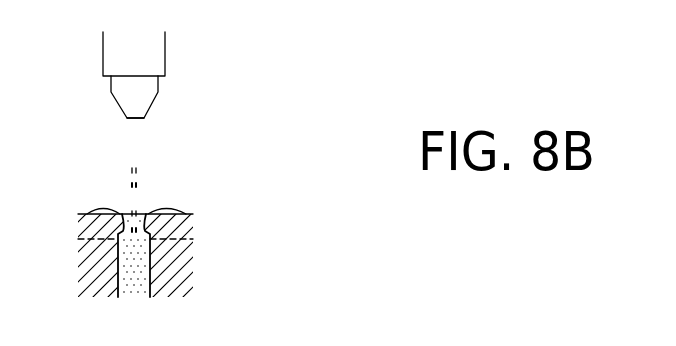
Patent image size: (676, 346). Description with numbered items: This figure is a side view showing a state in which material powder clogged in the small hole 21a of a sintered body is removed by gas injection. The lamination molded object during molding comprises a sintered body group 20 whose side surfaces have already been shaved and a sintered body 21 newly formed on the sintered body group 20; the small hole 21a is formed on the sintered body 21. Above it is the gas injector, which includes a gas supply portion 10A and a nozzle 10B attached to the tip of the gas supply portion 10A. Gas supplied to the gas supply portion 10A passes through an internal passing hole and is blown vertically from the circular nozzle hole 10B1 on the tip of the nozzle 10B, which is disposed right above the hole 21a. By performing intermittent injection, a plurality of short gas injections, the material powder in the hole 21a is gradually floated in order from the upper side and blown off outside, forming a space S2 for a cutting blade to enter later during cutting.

The gas supply portion 10A is at (153, 49).
The nozzle 10B is at (138, 105).
The nozzle hole 10B1 is at (130, 122).
The sintered body 21 is at (188, 228).
The sintered body group 20 is at (190, 265).
The small hole 21a is at (122, 215).
The space S2 is at (143, 210).